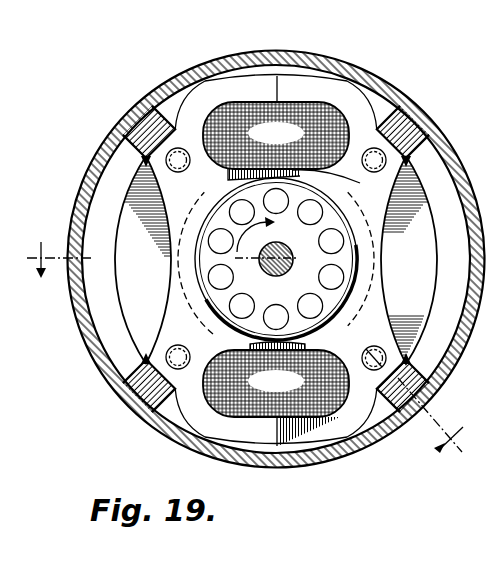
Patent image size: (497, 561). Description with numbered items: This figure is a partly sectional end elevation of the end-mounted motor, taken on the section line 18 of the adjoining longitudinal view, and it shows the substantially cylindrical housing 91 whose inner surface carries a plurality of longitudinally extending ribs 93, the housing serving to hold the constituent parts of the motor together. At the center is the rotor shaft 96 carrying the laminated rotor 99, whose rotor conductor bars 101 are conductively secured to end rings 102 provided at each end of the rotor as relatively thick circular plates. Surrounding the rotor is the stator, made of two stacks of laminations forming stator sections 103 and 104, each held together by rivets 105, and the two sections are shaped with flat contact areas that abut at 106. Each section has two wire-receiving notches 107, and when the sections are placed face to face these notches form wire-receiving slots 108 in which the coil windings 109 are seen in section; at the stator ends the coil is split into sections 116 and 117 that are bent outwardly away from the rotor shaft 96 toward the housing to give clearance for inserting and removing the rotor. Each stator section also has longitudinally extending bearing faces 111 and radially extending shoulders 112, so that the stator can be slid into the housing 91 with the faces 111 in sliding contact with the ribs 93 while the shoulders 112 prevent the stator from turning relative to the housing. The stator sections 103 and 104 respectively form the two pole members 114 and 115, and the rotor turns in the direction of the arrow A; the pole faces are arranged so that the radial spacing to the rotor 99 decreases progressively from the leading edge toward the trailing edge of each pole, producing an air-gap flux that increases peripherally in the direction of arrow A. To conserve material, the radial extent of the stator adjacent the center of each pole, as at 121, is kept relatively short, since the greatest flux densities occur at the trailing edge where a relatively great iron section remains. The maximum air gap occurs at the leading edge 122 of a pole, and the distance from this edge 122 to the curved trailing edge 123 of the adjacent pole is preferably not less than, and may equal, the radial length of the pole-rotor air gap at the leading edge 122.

The section line 18 is at (257, 347).
The housing 91 is at (181, 79).
The rib 93 is at (133, 110).
The rotor shaft 96 is at (278, 247).
The laminated rotor 99 is at (353, 285).
The rotor conductor bars 101 is at (341, 120).
The end rings 102 is at (286, 270).
The stator section 103 is at (323, 67).
The stator section 104 is at (222, 90).
The rivets 105 is at (166, 161).
The contact faces 106 is at (283, 85).
The wire-receiving notches 107 is at (205, 128).
The wire-receiving slots 108 is at (243, 113).
The coil windings 109 is at (276, 259).
The bearing faces 111 is at (166, 339).
The shoulders 112 is at (176, 421).
The pole member 114 is at (369, 247).
The pole member 115 is at (194, 235).
The coil section 116 is at (143, 260).
The coil section 117 is at (409, 260).
The stator portion of short radial extent 121 is at (171, 265).
The leading edge 122 is at (338, 179).
The trailing edge 123 is at (229, 176).
The arrow A is at (260, 233).